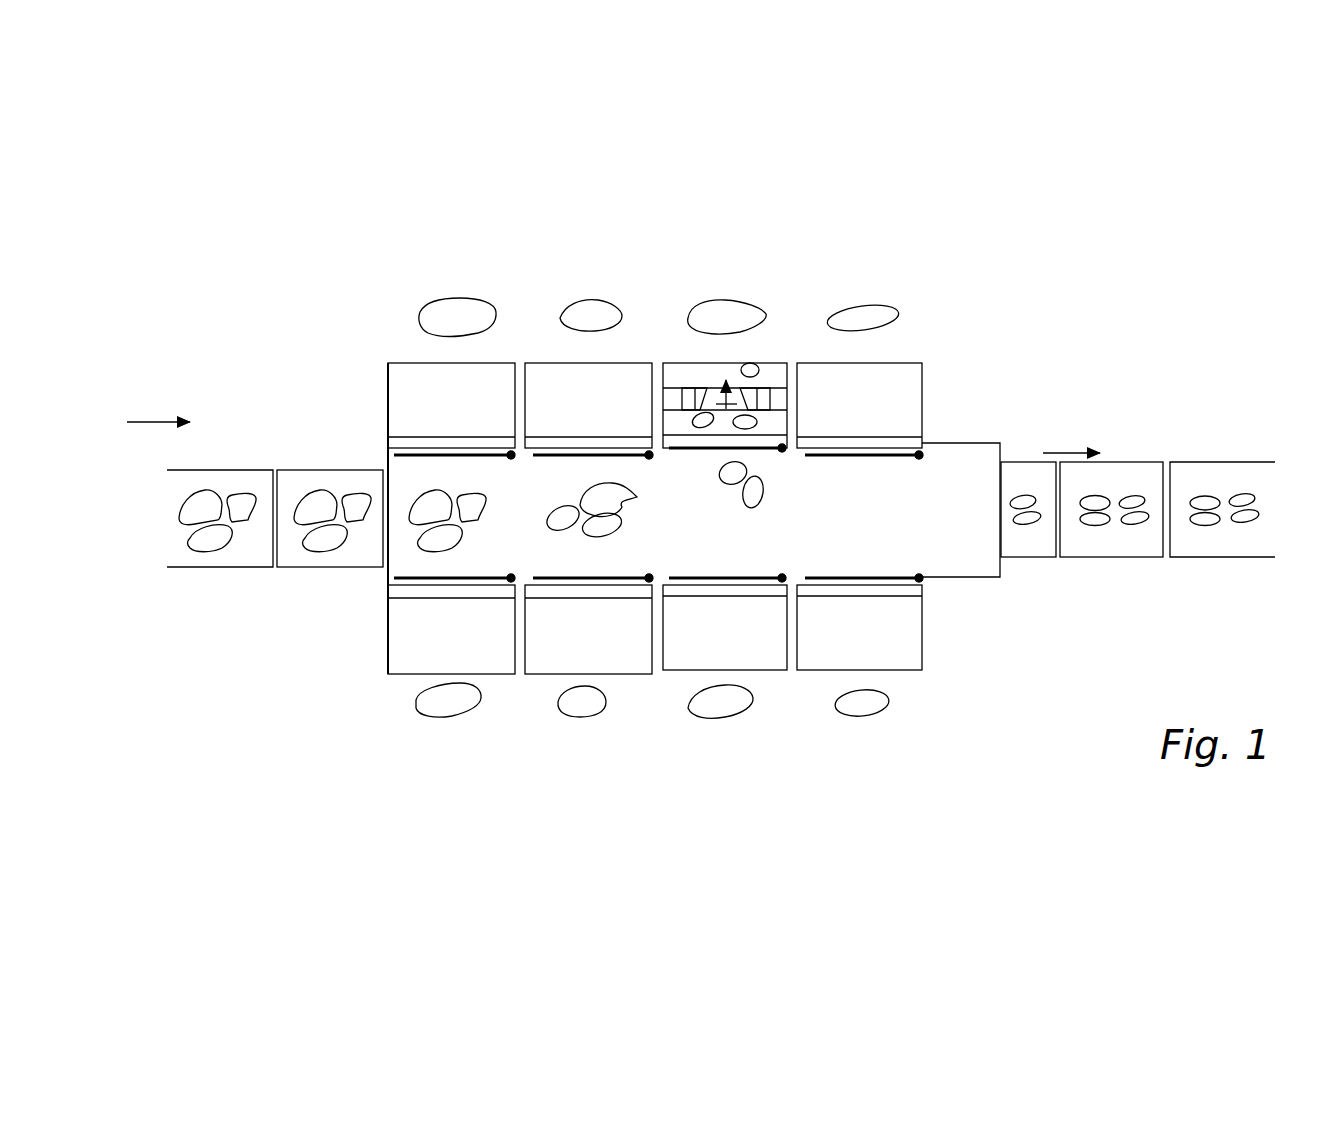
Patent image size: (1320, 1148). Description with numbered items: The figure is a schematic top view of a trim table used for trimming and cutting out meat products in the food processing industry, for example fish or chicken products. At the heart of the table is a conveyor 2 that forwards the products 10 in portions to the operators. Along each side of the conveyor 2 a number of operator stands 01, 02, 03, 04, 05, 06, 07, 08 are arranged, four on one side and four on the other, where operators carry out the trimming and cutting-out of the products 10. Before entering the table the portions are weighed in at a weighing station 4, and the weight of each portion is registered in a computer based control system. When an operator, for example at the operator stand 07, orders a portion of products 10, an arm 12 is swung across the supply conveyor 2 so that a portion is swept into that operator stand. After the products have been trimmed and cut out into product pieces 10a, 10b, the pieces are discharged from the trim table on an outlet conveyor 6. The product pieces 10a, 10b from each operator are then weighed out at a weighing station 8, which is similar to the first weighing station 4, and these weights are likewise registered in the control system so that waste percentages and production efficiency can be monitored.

The operator stand 01 is at (429, 735).
The operator stand 02 is at (572, 735).
The operator stand 03 is at (714, 738).
The operator stand 04 is at (847, 730).
The operator stand 05 is at (480, 267).
The operator stand 06 is at (620, 267).
The operator stand 07 is at (760, 267).
The operator stand 08 is at (885, 267).
The conveyor 2 is at (953, 460).
The weighing station 4 is at (293, 475).
The outlet conveyor 6 is at (1020, 477).
The weighing station 8 is at (1115, 483).
The products 10 is at (228, 552).
The product piece 10a is at (1088, 572).
The product piece 10b is at (1211, 568).
The arm 12 is at (750, 547).